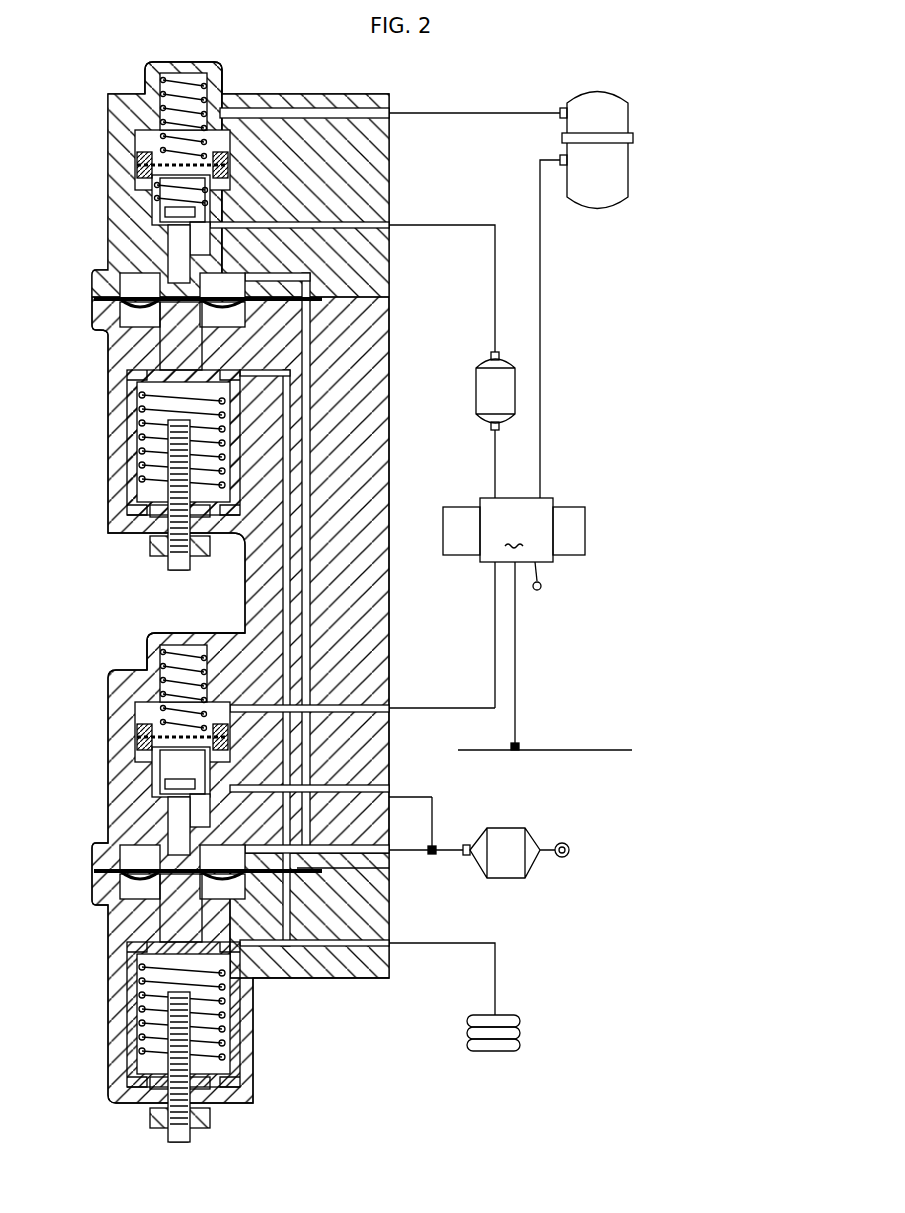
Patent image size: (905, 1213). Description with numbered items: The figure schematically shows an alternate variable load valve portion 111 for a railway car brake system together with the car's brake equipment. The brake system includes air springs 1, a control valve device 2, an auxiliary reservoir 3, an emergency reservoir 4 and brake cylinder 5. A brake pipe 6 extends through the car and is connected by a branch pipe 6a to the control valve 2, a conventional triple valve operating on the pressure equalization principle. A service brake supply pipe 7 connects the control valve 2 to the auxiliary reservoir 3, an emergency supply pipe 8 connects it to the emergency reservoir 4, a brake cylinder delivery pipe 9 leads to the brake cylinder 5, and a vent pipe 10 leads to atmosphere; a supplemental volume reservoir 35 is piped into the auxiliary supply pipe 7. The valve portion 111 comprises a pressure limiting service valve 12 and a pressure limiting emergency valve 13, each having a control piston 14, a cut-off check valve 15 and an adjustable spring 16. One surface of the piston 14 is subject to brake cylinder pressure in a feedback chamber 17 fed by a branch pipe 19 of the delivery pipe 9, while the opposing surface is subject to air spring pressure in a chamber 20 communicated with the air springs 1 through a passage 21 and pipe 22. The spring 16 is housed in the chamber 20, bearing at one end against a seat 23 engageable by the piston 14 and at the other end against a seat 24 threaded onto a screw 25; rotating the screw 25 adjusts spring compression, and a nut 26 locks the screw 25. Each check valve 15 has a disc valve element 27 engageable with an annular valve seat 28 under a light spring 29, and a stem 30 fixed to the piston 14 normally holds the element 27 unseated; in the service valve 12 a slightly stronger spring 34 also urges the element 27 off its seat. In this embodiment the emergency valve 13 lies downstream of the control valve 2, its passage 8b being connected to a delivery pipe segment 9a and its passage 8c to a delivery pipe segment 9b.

The variable load valve portion 111 is at (105, 94).
The pressure limiting emergency valve 13 is at (106, 672).
The pressure limiting service valve 12 is at (225, 92).
The light spring 29 is at (183, 78).
The cut-off check valve 15 is at (140, 150).
The disc valve element 27 is at (140, 164).
The annular valve seat 28 is at (150, 212).
The spring 34 is at (170, 205).
The piston stem 30 is at (178, 250).
The feedback chamber 17 is at (135, 290).
The control piston 14 is at (175, 340).
The seat 23 is at (135, 390).
The chamber 20 is at (140, 428).
The adjustable spring 16 is at (178, 458).
The seat 24 is at (135, 493).
The screw 25 is at (175, 505).
The nut 26 is at (155, 545).
The passage 21 is at (286, 595).
The service brake supply pipe 7 is at (466, 112).
The auxiliary reservoir 3 is at (615, 116).
The emergency reservoir 4 is at (615, 172).
The emergency supply pipe 8 is at (542, 292).
The supplemental volume reservoir 35 is at (488, 391).
The control valve device 2 is at (514, 530).
The vent pipe 10 is at (540, 573).
The brake cylinder delivery pipe 9 is at (492, 625).
The branch pipe 6a is at (516, 660).
The pipe segment 9a is at (450, 708).
The passage 8b is at (386, 716).
The brake pipe 6 is at (578, 752).
The delivery pipe segment 9b is at (412, 797).
The passage 8c is at (386, 796).
The brake cylinder 5 is at (513, 828).
The branch pipe 19 is at (405, 853).
The pipe 22 is at (432, 943).
The air springs 1 is at (520, 1022).